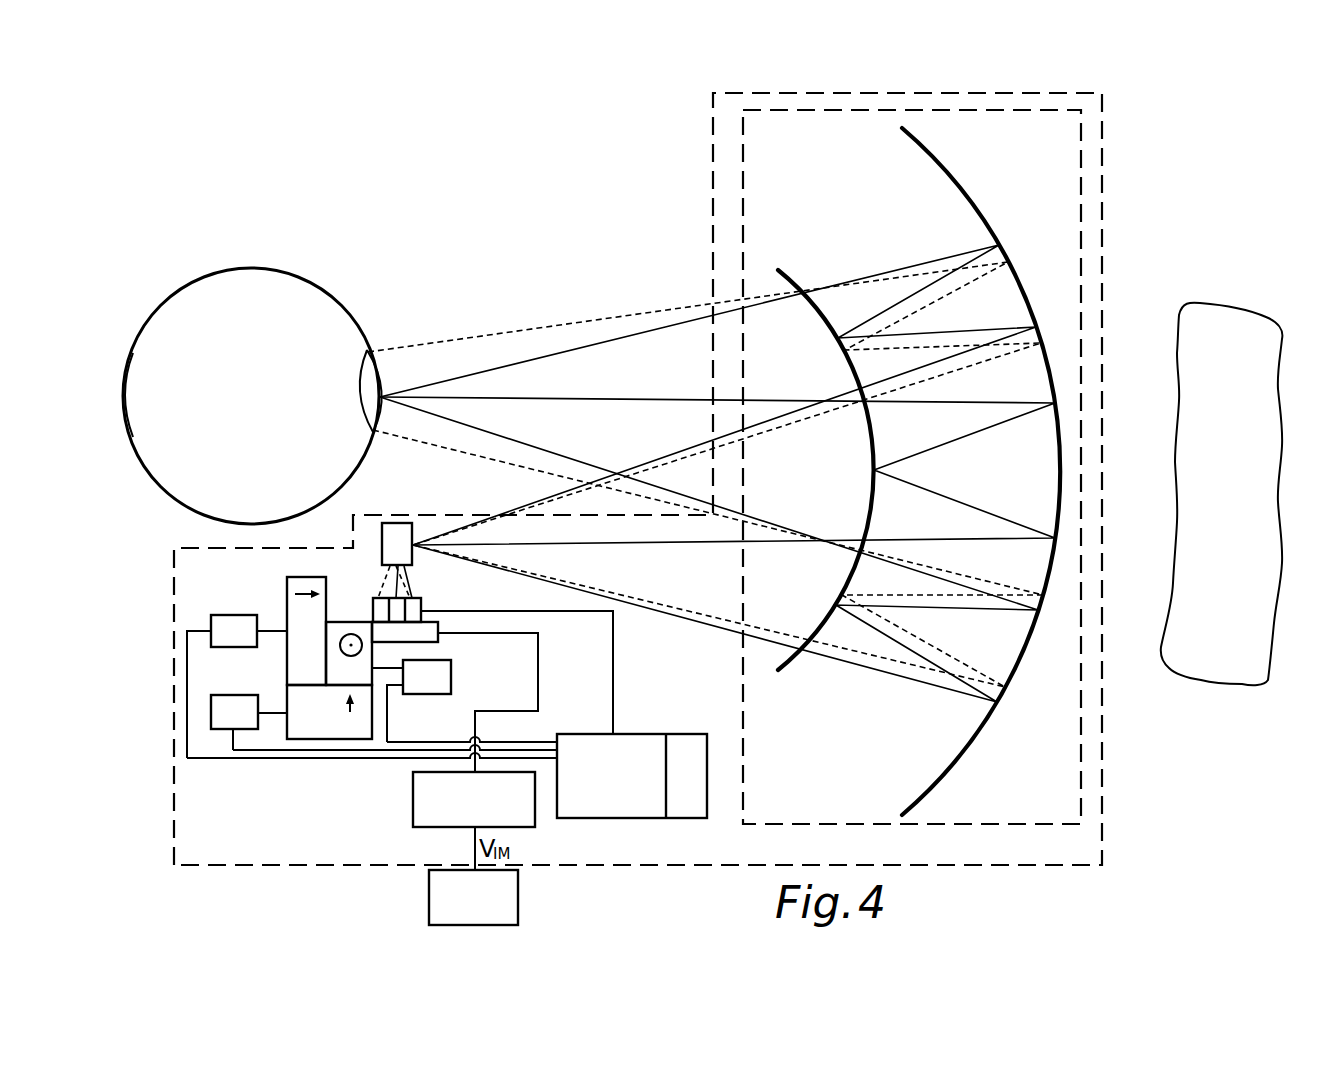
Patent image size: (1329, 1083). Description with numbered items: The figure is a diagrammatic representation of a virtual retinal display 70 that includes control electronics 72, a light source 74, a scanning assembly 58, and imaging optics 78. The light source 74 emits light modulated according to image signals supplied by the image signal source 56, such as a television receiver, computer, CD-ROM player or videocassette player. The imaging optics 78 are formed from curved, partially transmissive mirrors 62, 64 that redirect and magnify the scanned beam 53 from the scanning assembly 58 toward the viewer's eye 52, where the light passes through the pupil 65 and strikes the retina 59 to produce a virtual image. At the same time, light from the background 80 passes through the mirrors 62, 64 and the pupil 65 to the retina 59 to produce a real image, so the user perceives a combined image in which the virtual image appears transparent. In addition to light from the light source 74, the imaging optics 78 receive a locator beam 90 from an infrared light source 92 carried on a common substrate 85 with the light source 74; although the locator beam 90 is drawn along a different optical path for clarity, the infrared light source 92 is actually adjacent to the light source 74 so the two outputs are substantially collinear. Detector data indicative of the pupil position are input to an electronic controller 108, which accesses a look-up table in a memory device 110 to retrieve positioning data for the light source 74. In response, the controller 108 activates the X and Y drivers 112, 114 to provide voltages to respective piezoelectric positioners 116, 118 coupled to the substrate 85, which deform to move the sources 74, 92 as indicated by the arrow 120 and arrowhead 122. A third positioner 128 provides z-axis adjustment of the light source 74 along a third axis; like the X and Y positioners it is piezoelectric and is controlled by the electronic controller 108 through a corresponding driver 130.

The eye 52 is at (248, 267).
The retina 59 is at (128, 386).
The pupil 65 is at (378, 352).
The beam 53 is at (453, 378).
The locator beam 90 is at (857, 655).
The scanning assembly 58 is at (382, 535).
The light source 74 is at (403, 598).
The infrared light source 92 is at (373, 600).
The common substrate 85 is at (438, 636).
The third positioner 128 is at (306, 577).
The piezoelectric positioner 118 is at (350, 622).
The arrowhead 122 is at (340, 647).
The piezoelectric positioner 116 is at (305, 740).
The arrow 120 is at (355, 740).
The driver 130 is at (211, 618).
The X driver 112 is at (211, 718).
The Y driver 114 is at (451, 676).
The partially transmissive mirror 62 is at (791, 276).
The partially transmissive mirror 64 is at (972, 203).
The virtual retinal display 70 is at (1104, 320).
The imaging optics 78 is at (1084, 596).
The background 80 is at (1268, 684).
The electronic controller 108 is at (632, 776).
The memory device 110 is at (684, 819).
The control electronics 72 is at (422, 828).
The image signal source 56 is at (429, 895).